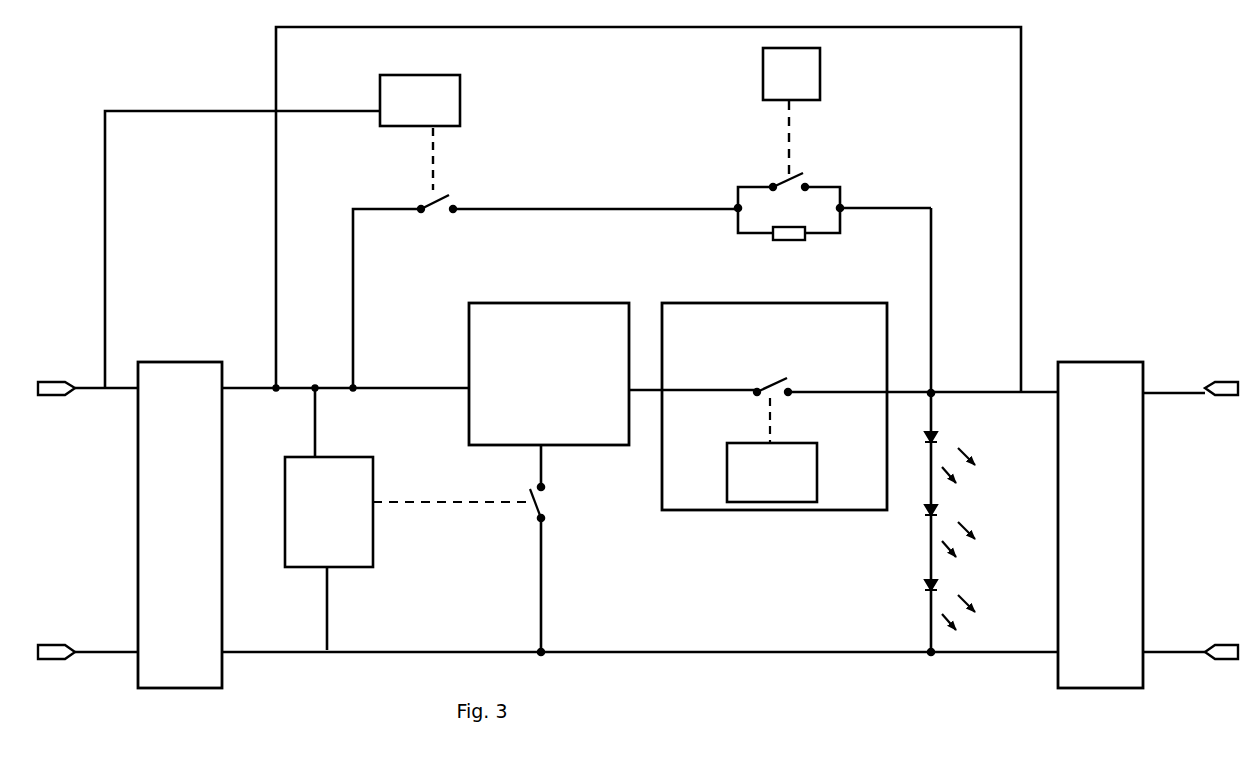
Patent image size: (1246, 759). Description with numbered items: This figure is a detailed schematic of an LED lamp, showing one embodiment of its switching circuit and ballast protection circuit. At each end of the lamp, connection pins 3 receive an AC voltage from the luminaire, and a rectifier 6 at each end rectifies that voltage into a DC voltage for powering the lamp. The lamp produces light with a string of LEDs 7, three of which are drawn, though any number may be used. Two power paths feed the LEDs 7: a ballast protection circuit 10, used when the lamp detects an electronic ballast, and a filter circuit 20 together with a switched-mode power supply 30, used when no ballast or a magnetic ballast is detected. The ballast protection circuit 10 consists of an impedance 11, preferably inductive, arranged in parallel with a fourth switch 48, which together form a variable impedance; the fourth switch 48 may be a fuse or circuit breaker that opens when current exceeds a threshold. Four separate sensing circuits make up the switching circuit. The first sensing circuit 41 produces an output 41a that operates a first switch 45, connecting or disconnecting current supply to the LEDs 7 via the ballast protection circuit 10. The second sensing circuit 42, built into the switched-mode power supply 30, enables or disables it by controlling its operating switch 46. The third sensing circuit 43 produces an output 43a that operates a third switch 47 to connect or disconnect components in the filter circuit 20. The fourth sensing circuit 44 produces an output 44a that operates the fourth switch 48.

The connection pins 3 is at (68, 382).
The rectifier 6 is at (182, 361).
The LEDs 7 is at (890, 560).
The ballast protection circuit 10 is at (700, 183).
The impedance 11 is at (802, 248).
The filter circuit 20 is at (514, 447).
The switched-mode power supply 30 is at (700, 512).
The first sensing circuit 41 is at (420, 100).
The output of first sensing circuit 41a is at (440, 150).
The second sensing circuit 42 is at (772, 450).
The third sensing circuit 43 is at (329, 519).
The output of third sensing circuit 43a is at (425, 505).
The fourth sensing circuit 44 is at (791, 74).
The output of fourth sensing circuit 44a is at (797, 137).
The first switch 45 is at (465, 202).
The operating switch 46 is at (797, 380).
The third switch 47 is at (556, 511).
The fourth switch 48 is at (810, 175).